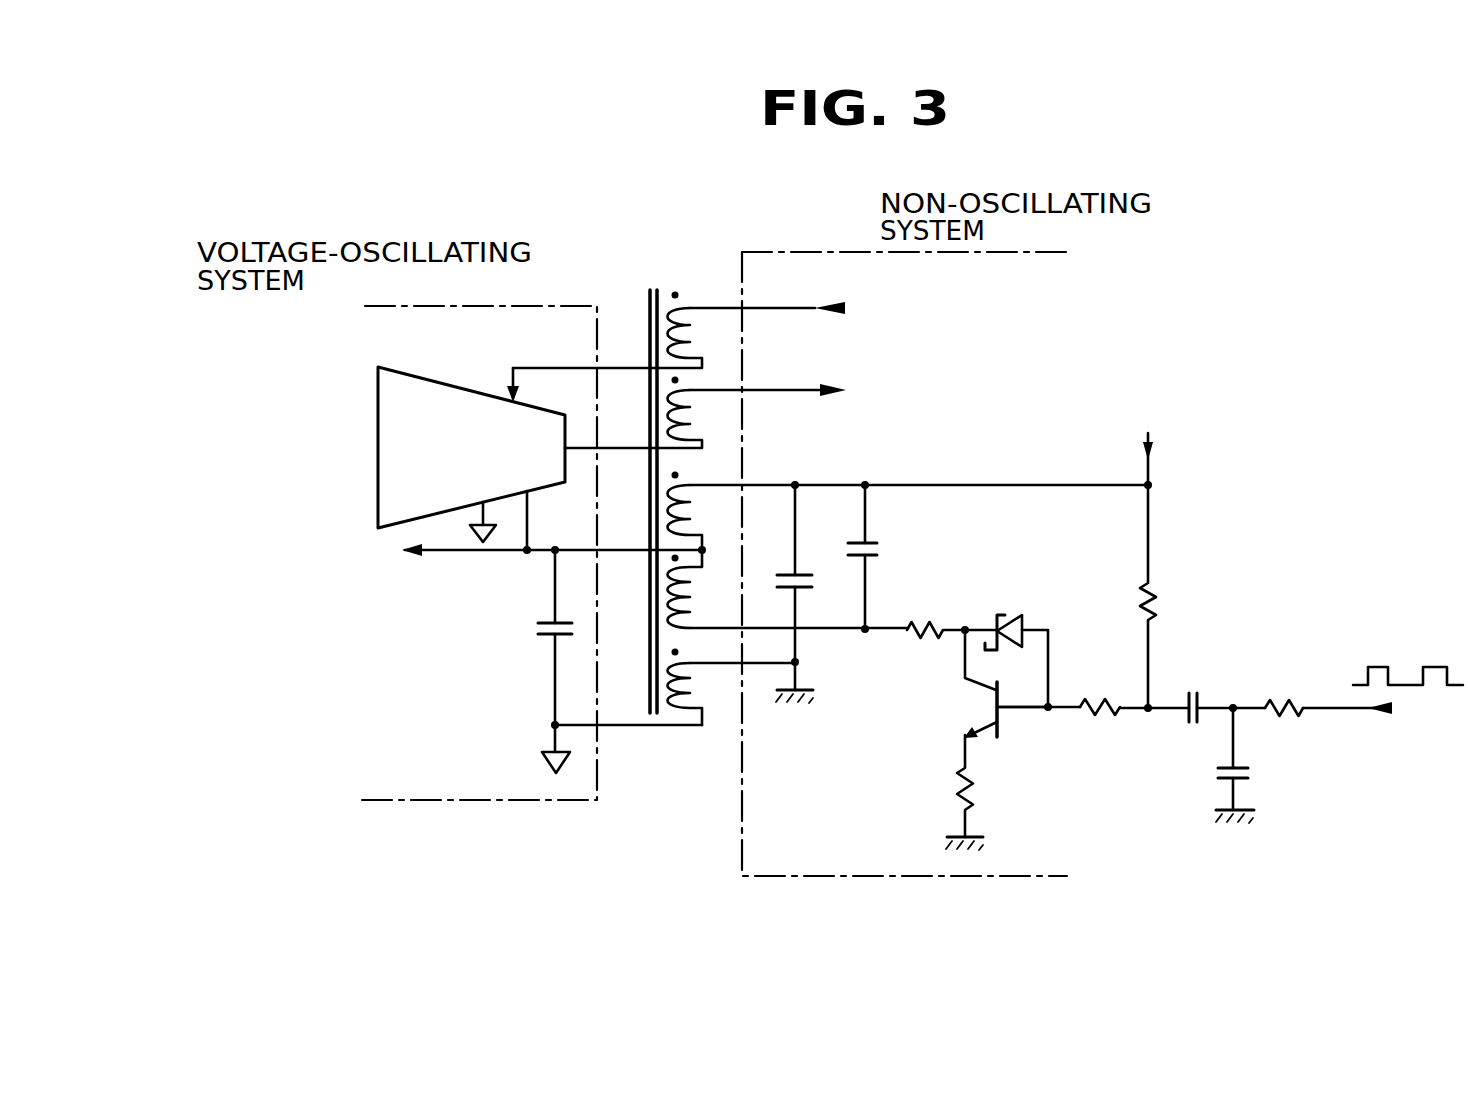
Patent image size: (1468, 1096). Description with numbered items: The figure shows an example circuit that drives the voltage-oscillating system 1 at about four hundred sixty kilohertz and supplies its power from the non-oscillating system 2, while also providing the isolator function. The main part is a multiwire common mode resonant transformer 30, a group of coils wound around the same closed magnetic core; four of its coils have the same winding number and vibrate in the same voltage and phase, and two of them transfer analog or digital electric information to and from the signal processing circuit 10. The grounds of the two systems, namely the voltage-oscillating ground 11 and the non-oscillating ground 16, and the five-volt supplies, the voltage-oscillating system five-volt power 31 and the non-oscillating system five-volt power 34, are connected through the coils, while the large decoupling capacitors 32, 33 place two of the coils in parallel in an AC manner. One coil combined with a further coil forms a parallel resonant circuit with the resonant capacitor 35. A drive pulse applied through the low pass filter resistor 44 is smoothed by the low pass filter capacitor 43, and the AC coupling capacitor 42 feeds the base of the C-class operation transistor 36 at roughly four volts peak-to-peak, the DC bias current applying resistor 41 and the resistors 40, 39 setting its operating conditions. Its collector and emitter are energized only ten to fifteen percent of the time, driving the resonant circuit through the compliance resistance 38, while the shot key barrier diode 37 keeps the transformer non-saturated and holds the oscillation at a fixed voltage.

The voltage-oscillating system 1 is at (558, 296).
The non-oscillating system 2 is at (832, 243).
The signal processing circuit 10 is at (378, 440).
The voltage-oscillating system ground 11 is at (548, 776).
The non-oscillating ground 16 is at (805, 700).
The multiwire common mode resonant transformer 30 is at (652, 284).
The voltage-oscillating system +5 V power 31 is at (398, 552).
The decoupling capacitor 32 is at (545, 633).
The decoupling capacitor 33 is at (812, 578).
The non-oscillating system +5 V power 34 is at (1140, 447).
The resonant capacitor 35 is at (880, 552).
The C-class operation transistor 36 is at (980, 708).
The shot key barrier diode 37 is at (1012, 613).
The compliance resistance 38 is at (930, 624).
The resistor 39 is at (975, 790).
The resistor 40 is at (1108, 700).
The DC bias current applying resistor 41 is at (1160, 606).
The AC coupling capacitor 42 is at (1195, 690).
The low pass filter capacitor 43 is at (1250, 772).
The low pass filter resistor 44 is at (1288, 700).